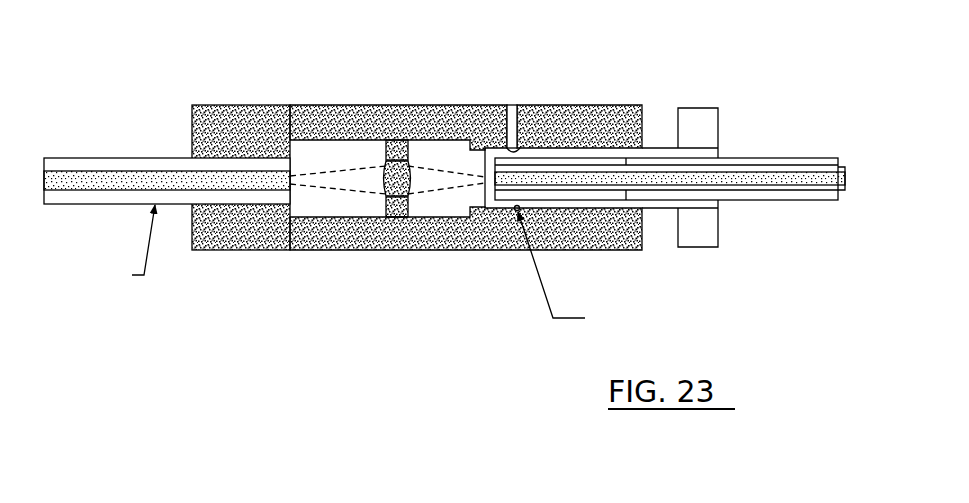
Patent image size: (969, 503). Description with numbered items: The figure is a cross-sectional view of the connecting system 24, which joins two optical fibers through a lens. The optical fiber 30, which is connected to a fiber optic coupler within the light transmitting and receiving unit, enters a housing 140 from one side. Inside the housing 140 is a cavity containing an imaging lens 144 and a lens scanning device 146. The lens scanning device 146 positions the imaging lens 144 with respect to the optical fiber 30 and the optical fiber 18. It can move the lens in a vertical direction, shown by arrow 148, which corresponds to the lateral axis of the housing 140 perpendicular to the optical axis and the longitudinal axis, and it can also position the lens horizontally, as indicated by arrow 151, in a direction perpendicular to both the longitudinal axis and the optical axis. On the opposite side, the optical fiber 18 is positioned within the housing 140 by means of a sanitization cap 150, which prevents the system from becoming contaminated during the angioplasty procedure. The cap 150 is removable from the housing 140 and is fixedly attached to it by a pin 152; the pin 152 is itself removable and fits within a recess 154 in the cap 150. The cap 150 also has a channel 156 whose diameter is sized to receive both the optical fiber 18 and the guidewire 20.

The optical fiber 18 is at (760, 170).
The guidewire 20 is at (800, 157).
The connecting system 24 is at (293, 104).
The optical fiber 30 is at (122, 170).
The housing 140 is at (428, 252).
The imaging lens 144 is at (390, 190).
The lens scanning device 146 is at (395, 215).
The arrow 148 is at (400, 152).
The sanitization cap 150 is at (596, 142).
The arrow 151 is at (402, 214).
The pin 152 is at (509, 103).
The recess 154 is at (520, 148).
The channel 156 is at (694, 150).